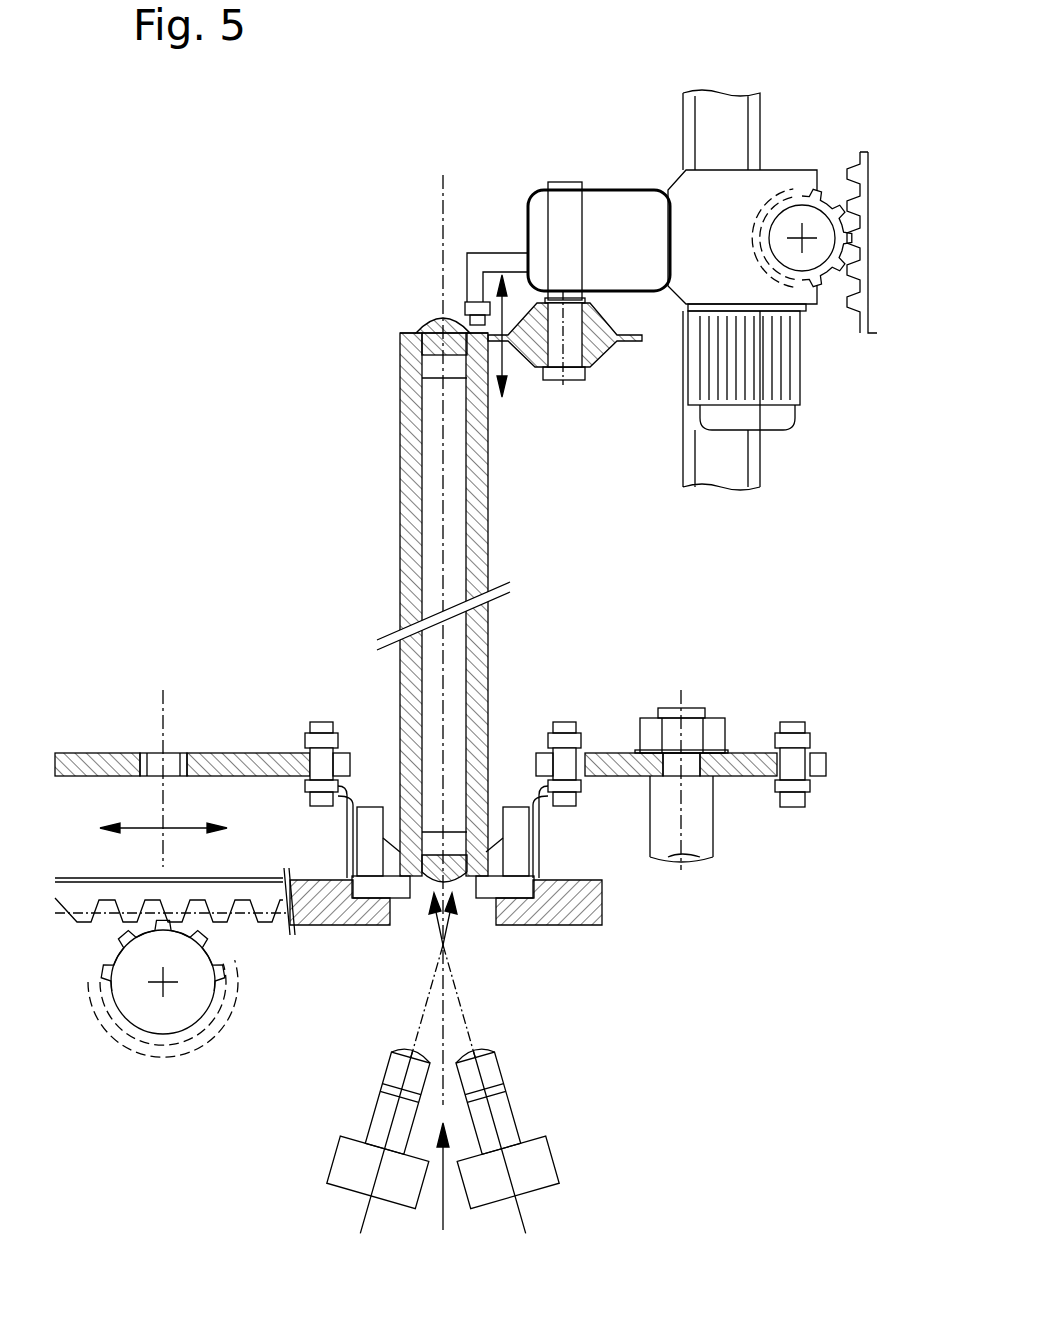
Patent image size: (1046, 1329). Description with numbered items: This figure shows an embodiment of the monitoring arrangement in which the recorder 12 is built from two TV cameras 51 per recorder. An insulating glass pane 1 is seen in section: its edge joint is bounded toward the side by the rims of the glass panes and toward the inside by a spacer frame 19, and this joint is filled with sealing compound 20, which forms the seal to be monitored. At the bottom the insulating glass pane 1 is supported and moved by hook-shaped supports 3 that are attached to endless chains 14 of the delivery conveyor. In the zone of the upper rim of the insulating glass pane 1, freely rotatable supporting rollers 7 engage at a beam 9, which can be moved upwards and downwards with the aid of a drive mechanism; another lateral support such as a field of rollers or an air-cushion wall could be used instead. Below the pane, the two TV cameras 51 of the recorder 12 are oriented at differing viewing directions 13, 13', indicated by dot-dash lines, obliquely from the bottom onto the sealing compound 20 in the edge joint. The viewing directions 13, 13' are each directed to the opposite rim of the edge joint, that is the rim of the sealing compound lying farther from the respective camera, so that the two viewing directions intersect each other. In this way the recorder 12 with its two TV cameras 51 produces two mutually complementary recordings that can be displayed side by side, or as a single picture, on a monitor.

The insulating glass pane 1 is at (413, 553).
The hook-shaped supports 3 is at (393, 887).
The supporting rollers 7 is at (533, 370).
The beam 9 is at (619, 190).
The recorder 12 is at (442, 1195).
The viewing direction 13 is at (486, 1001).
The viewing direction 13' is at (398, 1001).
The endless chains 14 is at (330, 722).
The spacer frame 19 is at (448, 365).
The sealing compound 20 is at (428, 320).
The TV cameras 51 is at (350, 1165).